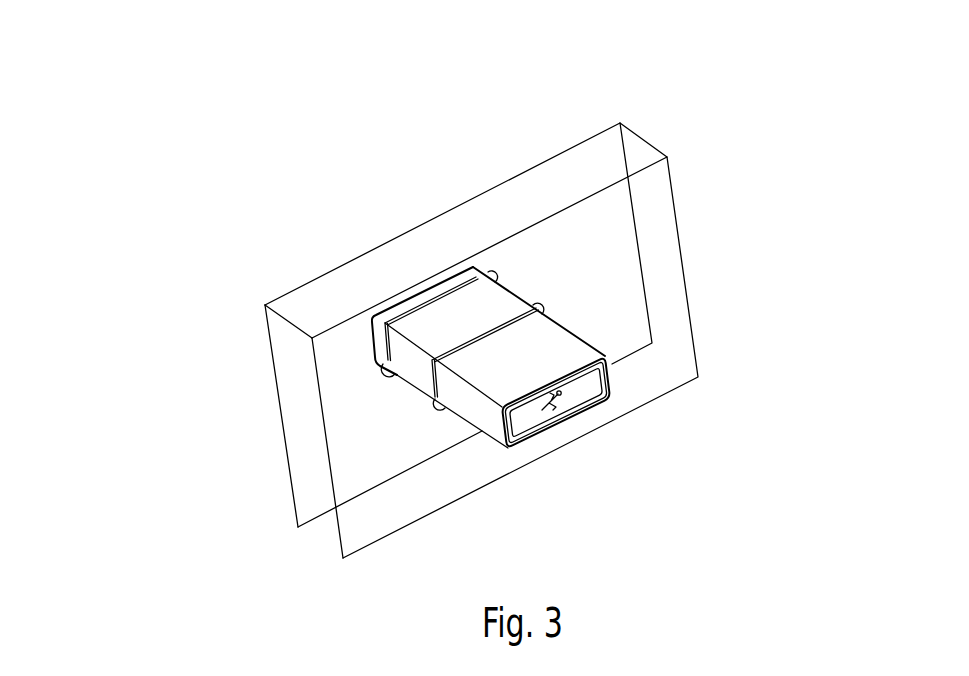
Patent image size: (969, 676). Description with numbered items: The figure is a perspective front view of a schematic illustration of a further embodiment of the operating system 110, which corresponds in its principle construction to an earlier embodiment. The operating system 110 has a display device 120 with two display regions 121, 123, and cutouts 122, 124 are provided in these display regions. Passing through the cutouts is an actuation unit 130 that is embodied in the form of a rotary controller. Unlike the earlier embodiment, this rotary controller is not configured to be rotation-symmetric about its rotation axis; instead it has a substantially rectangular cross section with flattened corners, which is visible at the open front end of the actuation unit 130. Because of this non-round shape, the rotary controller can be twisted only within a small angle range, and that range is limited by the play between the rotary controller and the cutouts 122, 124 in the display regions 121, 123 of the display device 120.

The operating system 110 is at (763, 157).
The display device 120 is at (183, 566).
The display region 121 is at (292, 488).
The cutout 122 is at (472, 289).
The display region 123 is at (335, 512).
The cutout 124 is at (533, 331).
The actuation unit 130 is at (577, 396).